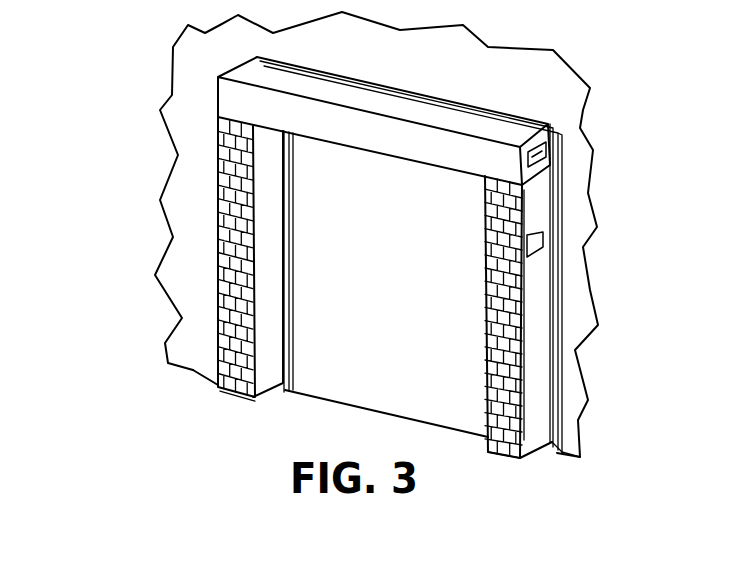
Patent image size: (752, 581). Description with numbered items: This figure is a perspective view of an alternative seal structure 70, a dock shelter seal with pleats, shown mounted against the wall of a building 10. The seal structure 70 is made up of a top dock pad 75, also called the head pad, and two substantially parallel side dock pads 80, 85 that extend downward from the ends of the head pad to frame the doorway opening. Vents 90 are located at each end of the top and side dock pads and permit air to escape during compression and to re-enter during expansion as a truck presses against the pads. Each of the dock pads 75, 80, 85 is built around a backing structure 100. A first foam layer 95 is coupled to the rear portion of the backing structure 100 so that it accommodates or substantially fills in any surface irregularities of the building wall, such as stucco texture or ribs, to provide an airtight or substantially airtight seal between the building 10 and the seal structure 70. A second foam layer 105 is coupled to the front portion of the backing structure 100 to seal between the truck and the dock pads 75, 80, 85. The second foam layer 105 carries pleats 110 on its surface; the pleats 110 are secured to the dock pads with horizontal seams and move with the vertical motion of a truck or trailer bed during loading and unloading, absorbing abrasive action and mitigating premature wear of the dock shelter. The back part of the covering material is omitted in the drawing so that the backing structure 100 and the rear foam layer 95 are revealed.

The building 10 is at (478, 84).
The alternative seal structure 70 is at (192, 65).
The top dock pad 75 is at (455, 162).
The side dock pad 80 is at (218, 149).
The side dock pad 85 is at (541, 208).
The vents 90 is at (547, 152).
The first foam layer 95 is at (560, 418).
The backing structure 100 is at (552, 442).
The second foam layer 105 is at (530, 438).
The pleats 110 is at (487, 275).